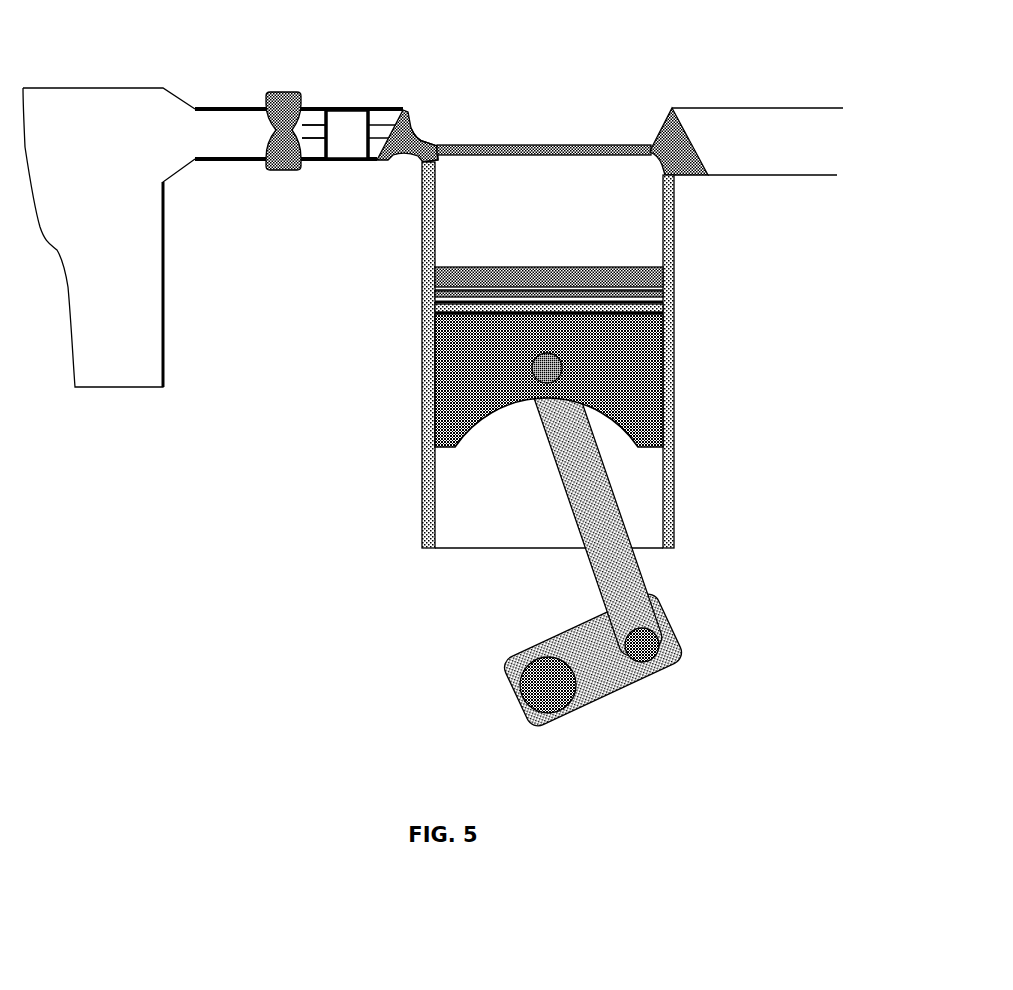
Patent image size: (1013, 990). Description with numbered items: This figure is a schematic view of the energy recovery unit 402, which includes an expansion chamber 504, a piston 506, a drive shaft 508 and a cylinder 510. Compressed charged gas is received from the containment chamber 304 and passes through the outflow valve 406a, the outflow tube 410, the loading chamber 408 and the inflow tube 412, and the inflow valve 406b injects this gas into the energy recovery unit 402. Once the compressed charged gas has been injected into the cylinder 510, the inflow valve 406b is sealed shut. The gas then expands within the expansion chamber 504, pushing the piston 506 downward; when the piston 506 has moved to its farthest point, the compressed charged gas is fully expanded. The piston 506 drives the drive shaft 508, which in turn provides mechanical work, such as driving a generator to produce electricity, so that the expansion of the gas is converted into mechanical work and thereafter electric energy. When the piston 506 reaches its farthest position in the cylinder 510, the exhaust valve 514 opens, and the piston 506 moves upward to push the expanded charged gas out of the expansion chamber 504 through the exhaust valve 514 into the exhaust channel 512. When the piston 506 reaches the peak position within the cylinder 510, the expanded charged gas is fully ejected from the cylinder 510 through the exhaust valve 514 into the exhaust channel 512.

The containment chamber 304 is at (93, 319).
The energy recovery unit 402 is at (357, 490).
The outflow valve 406a is at (283, 172).
The inflow valve 406b is at (428, 138).
The loading chamber 408 is at (357, 126).
The outflow tube 410 is at (311, 127).
The inflow tube 412 is at (384, 128).
The expansion chamber 504 is at (470, 238).
The piston 506 is at (453, 373).
The drive shaft 508 is at (527, 683).
The cylinder 510 is at (668, 480).
The exhaust channel 512 is at (793, 170).
The exhaust valve 514 is at (668, 132).